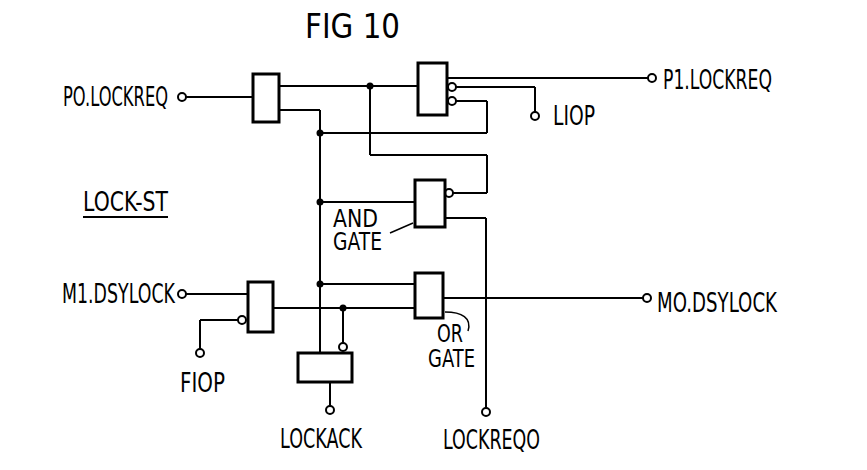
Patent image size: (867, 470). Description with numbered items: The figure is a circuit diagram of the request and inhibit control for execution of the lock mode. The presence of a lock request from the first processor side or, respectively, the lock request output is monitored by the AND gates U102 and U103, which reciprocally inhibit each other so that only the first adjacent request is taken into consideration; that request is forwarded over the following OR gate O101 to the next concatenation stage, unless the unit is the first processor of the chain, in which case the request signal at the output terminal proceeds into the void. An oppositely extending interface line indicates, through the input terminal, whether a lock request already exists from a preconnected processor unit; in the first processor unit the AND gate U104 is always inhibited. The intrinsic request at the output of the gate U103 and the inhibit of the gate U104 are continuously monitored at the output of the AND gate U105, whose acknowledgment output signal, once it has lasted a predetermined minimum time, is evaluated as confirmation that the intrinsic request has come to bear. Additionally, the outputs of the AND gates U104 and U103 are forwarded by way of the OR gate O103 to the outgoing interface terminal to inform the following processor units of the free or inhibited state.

The OR gate O101 is at (255, 118).
The AND gate U102 is at (452, 50).
The AND gate U103 is at (415, 192).
The OR gate O103 is at (417, 275).
The AND gate U104 is at (266, 274).
The AND gate U105 is at (352, 370).